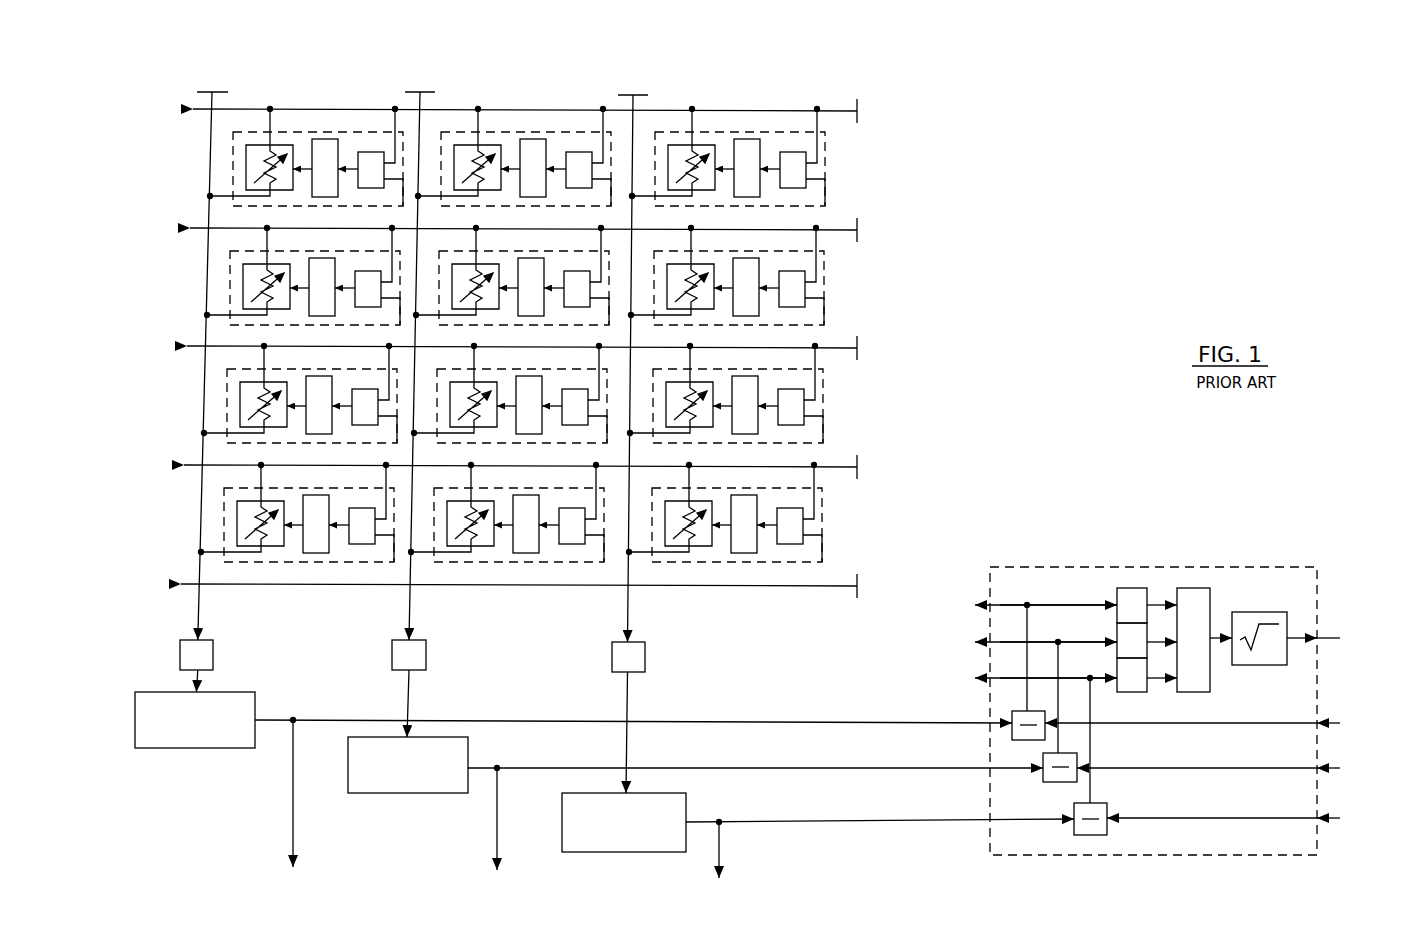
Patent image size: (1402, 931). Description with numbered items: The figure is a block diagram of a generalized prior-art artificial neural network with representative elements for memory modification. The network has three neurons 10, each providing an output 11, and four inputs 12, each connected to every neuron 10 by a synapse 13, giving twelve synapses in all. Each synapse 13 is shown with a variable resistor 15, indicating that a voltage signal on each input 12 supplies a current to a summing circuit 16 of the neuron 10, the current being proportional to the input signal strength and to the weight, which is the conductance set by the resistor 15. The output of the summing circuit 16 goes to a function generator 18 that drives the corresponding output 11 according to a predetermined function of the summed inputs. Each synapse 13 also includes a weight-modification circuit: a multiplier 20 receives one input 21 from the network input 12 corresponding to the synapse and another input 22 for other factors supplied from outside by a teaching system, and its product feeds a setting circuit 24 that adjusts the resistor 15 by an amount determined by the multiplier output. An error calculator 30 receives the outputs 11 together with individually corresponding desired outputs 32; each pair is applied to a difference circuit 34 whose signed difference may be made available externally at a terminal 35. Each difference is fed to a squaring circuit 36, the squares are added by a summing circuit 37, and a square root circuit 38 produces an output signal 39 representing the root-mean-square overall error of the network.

The neuron 10 is at (297, 103).
The output 11 is at (286, 868).
The input 12 is at (177, 111).
The synapse 13 is at (314, 126).
The variable resistor 15 is at (266, 146).
The summing circuit 16 is at (214, 656).
The function generator 18 is at (195, 749).
The multiplier 20 is at (370, 151).
The input of multiplier 21 is at (396, 140).
The input of multiplier 22 is at (401, 182).
The setting circuit 24 is at (320, 197).
The error calculator 30 is at (1088, 566).
The desired output 32 is at (1340, 723).
The difference circuit 34 is at (1047, 735).
The terminal 35 is at (972, 606).
The squaring circuit 36 is at (1117, 670).
The summing circuit 37 is at (1200, 598).
The square root circuit 38 is at (1255, 612).
The output signal 39 is at (1340, 638).